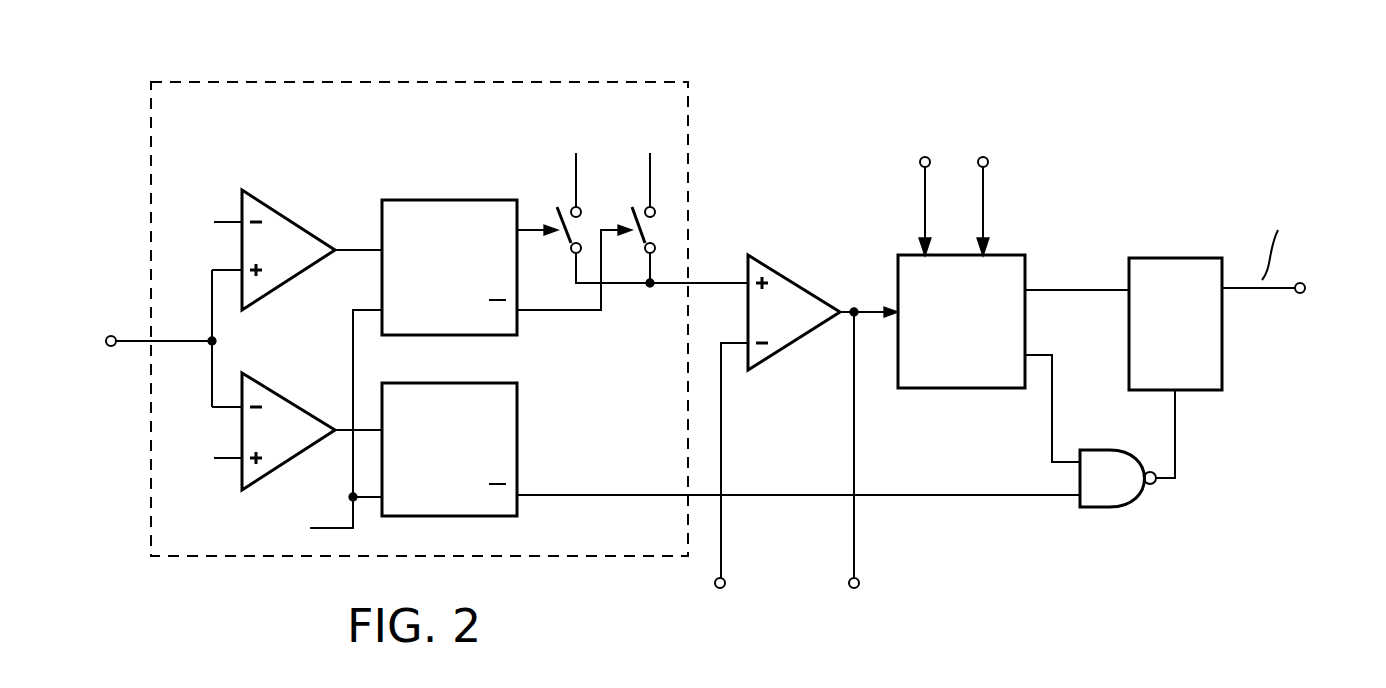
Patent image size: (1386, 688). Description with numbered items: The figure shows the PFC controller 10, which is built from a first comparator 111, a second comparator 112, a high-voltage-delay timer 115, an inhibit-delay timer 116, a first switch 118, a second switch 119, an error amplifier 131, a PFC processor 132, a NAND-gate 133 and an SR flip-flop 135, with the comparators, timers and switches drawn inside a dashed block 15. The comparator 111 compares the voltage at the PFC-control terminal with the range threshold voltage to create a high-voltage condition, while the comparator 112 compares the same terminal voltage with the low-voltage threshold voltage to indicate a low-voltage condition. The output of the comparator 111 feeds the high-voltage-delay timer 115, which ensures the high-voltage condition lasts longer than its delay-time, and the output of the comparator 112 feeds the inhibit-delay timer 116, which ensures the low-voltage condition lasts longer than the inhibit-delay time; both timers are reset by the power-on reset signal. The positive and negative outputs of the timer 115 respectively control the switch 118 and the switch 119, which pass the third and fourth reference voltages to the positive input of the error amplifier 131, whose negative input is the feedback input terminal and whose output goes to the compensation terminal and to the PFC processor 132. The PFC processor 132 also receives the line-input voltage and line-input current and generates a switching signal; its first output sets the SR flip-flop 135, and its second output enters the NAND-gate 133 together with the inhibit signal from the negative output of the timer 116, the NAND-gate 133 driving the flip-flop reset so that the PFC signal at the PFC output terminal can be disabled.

The PFC controller 10 is at (1210, 67).
The timing control circuit 15 is at (640, 82).
The comparator 111 is at (290, 212).
The comparator 112 is at (288, 395).
The high-voltage-delay timer 115 is at (405, 198).
The inhibit-delay timer 116 is at (518, 379).
The switch 118 is at (557, 203).
The switch 119 is at (658, 237).
The error amplifier 131 is at (788, 270).
The PFC processor 132 is at (1013, 250).
The NAND-gate 133 is at (1100, 512).
The SR flip-flop 135 is at (1168, 255).